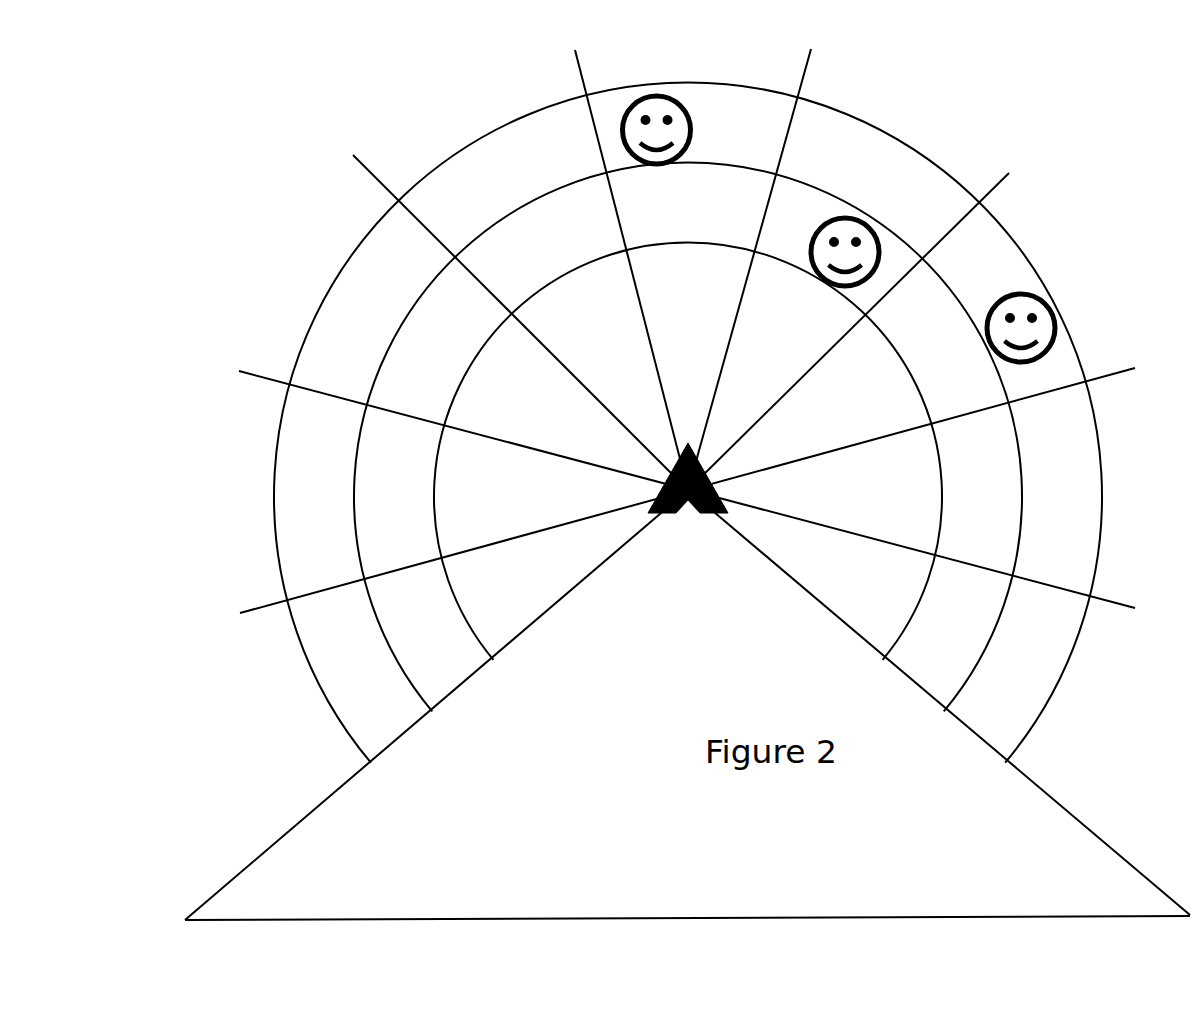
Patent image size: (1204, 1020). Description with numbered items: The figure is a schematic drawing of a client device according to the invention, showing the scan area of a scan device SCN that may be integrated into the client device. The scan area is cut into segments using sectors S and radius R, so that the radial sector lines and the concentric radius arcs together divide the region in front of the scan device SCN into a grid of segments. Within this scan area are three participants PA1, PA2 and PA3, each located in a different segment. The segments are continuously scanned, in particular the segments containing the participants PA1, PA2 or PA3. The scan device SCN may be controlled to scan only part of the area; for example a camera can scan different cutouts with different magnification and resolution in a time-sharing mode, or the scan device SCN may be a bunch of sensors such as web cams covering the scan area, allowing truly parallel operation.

The participant PA1 is at (663, 95).
The participant PA2 is at (870, 229).
The participant PA3 is at (1070, 317).
The sectors S is at (676, 423).
The scan device SCN is at (688, 506).
The radius R is at (687, 705).